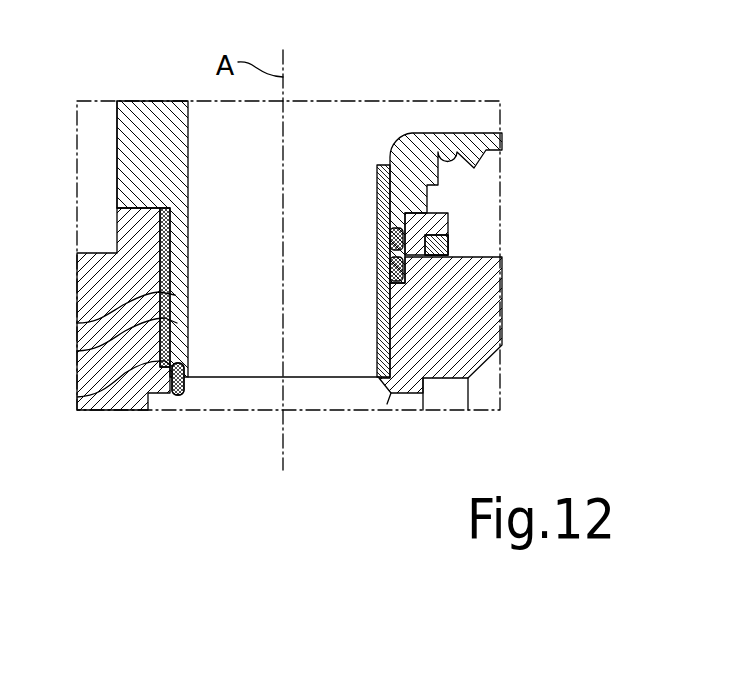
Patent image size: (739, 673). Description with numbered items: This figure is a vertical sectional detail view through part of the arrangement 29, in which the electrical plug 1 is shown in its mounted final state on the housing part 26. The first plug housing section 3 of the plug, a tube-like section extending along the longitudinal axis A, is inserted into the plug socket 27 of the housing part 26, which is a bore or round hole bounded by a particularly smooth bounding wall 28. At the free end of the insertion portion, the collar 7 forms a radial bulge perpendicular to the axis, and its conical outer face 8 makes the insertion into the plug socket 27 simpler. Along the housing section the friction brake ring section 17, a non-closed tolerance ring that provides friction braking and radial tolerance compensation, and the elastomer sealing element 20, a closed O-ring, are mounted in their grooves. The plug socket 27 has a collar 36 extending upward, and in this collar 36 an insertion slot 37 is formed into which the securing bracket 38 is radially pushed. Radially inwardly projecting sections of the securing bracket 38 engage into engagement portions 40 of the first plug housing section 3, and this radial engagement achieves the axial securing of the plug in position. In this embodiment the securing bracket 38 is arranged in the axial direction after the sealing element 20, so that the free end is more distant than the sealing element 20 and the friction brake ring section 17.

The electrical plug 1 is at (170, 92).
The first plug housing section 3 is at (110, 165).
The collar 7 is at (77, 397).
The conical outer face 8 is at (177, 368).
The friction brake ring section 17 is at (77, 351).
The sealing element 20 is at (394, 265).
The housing part 26 is at (507, 290).
The plug socket 27 is at (374, 409).
The bounding wall 28 is at (77, 323).
The arrangement 29 is at (98, 95).
The collar 36 is at (442, 207).
The insertion slot 37 is at (456, 235).
The securing bracket 38 is at (448, 250).
The engagement portions 40 is at (382, 167).